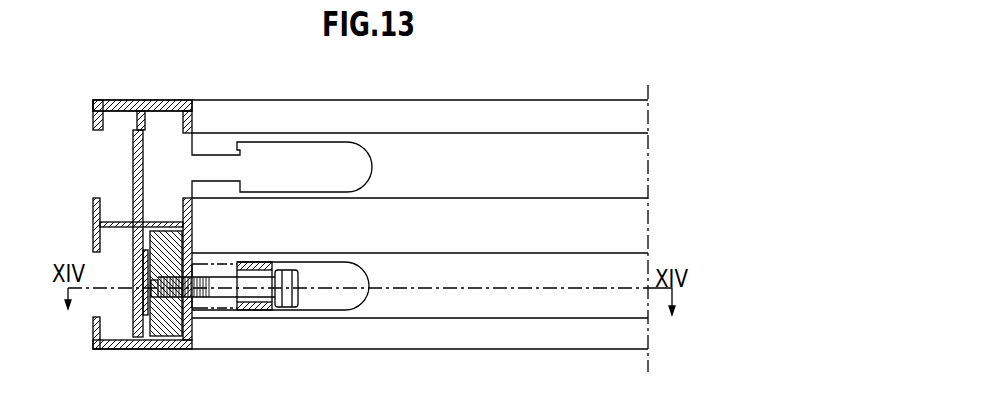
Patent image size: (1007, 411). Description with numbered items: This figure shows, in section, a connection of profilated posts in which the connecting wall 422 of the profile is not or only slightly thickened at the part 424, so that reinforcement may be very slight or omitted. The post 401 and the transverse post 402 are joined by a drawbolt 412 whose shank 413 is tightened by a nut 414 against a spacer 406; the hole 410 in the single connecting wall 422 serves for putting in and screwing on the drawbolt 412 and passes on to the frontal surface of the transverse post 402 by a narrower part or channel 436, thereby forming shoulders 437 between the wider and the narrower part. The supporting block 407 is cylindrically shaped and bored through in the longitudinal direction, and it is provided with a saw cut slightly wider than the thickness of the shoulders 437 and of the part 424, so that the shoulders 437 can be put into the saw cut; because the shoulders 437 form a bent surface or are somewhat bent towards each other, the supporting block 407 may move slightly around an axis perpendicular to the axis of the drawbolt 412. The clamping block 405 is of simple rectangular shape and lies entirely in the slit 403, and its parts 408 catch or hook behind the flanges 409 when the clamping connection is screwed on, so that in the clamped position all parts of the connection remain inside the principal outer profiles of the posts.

The top channel member 401 is at (118, 99).
The profile member 402 is at (420, 222).
The slit 403 is at (166, 134).
The clamping block 405 is at (150, 242).
The spacer sleeve 406 is at (210, 310).
The supporting block 407 is at (262, 309).
The parts of the clamping block 408 is at (184, 347).
The flanges 409 is at (92, 126).
The hole 410 is at (338, 154).
The bolt 412 is at (166, 342).
The bolt shank 413 is at (286, 301).
The nut 414 is at (300, 299).
The connecting wall 422 is at (487, 162).
The thickened part of the connecting wall 424 is at (135, 177).
The narrower part or channel 436 is at (231, 163).
The shoulders 437 is at (234, 148).